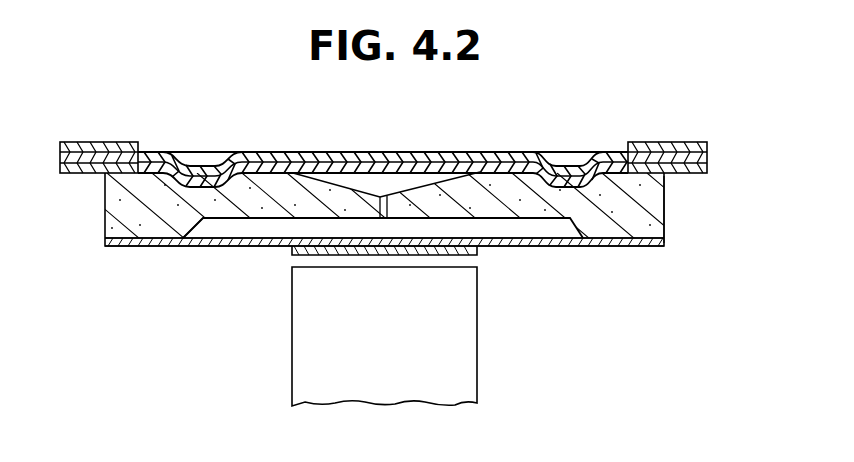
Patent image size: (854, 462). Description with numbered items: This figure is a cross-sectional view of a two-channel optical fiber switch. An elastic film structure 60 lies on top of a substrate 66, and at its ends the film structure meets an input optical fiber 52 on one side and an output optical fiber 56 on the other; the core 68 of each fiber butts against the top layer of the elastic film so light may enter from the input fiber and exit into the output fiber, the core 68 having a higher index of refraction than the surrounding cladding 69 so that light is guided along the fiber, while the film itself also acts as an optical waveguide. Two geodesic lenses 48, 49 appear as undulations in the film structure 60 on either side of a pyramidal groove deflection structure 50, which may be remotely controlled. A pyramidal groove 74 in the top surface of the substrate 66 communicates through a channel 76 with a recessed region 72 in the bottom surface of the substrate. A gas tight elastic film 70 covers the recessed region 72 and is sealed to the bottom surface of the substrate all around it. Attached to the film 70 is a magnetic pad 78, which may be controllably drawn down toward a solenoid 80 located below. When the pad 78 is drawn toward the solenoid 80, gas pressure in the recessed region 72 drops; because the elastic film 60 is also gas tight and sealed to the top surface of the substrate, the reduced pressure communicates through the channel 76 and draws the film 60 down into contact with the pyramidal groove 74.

The geodesic lens 48 is at (200, 149).
The geodesic lens 49 is at (553, 148).
The pyramidal groove deflection structure 50 is at (355, 180).
The input optical fiber 52 is at (87, 190).
The output optical fiber 56 is at (680, 188).
The elastic film structure 60 is at (253, 146).
The substrate 66 is at (162, 230).
The core 68 is at (108, 152).
The cladding 69 is at (75, 144).
The gas tight elastic film 70 is at (497, 244).
The recessed region 72 is at (557, 227).
The pyramidal groove 74 is at (427, 187).
The channel 76 is at (383, 197).
The magnetic pad 78 is at (294, 252).
The solenoid 80 is at (302, 357).